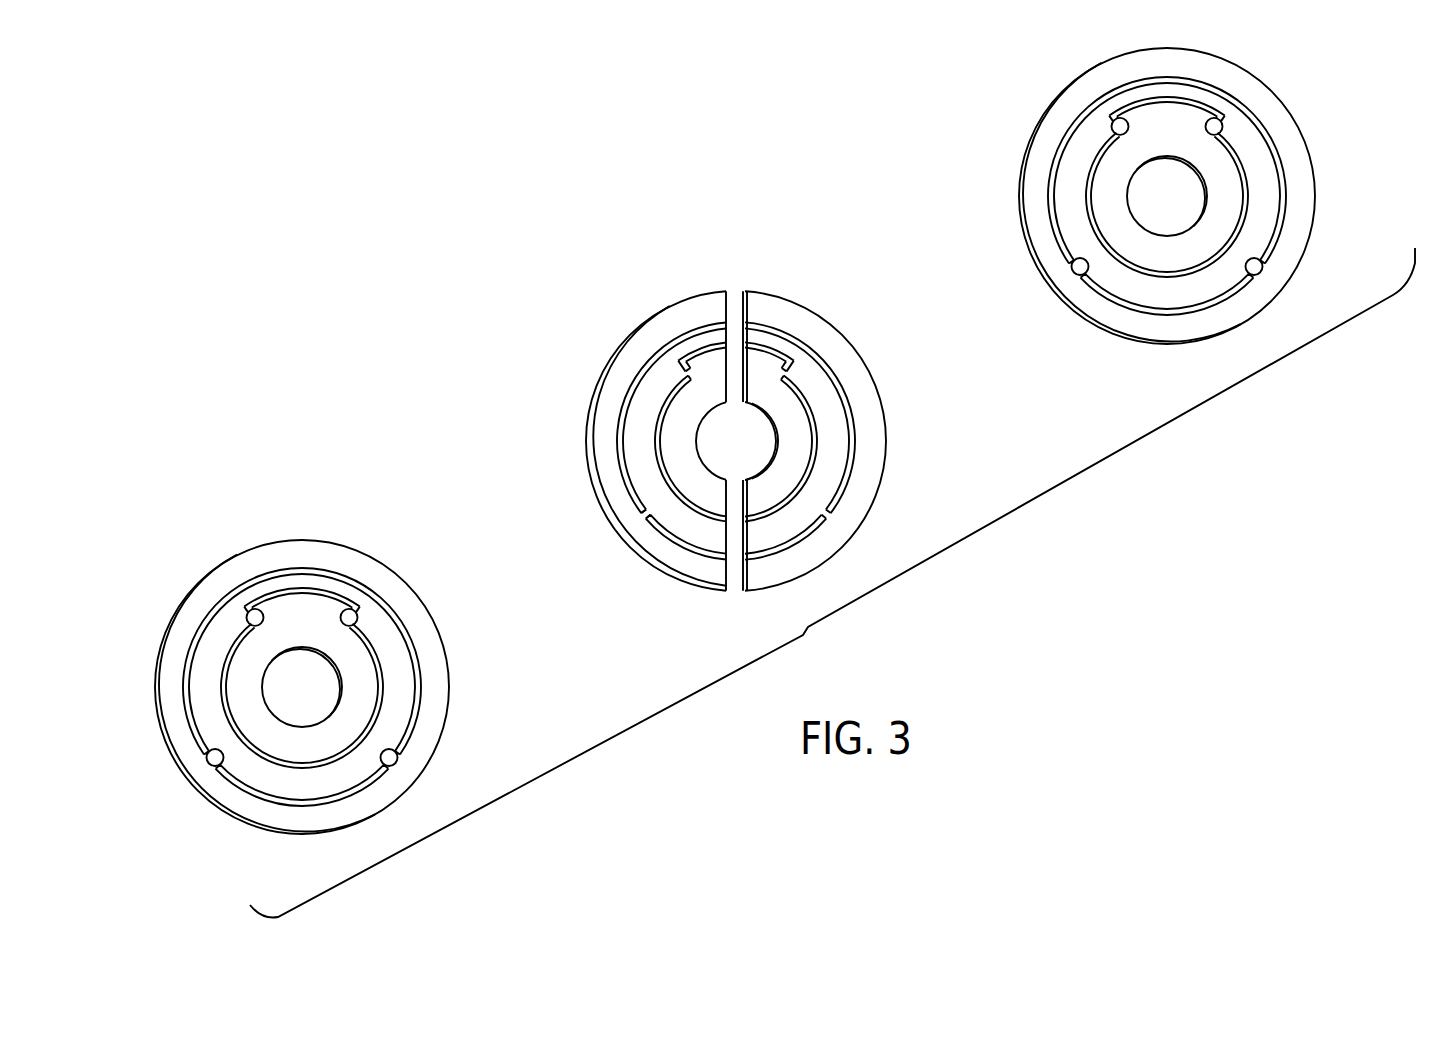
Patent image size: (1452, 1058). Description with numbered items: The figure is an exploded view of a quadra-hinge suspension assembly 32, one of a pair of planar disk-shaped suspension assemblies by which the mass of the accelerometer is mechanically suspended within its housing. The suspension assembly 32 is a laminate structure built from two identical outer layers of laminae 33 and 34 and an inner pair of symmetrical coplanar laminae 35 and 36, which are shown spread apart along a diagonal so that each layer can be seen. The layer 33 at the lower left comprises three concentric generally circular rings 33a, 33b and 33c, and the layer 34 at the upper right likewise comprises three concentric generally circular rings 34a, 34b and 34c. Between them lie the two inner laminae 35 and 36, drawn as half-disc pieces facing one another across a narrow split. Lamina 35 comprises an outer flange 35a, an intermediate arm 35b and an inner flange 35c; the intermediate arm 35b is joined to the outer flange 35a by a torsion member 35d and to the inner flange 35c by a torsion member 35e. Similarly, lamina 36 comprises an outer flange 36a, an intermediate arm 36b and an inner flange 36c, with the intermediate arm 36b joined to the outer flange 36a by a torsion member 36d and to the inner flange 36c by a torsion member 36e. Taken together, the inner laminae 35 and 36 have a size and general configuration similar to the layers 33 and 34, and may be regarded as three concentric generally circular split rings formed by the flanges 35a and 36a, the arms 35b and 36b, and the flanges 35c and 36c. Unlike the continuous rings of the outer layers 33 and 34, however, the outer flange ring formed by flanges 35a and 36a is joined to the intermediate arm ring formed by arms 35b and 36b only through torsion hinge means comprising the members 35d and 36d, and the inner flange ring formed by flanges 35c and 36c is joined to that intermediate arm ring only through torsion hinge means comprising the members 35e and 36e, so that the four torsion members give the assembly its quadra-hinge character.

The suspension assembly 32 is at (224, 537).
The outer layer lamina 33 is at (170, 569).
The outer ring 33a is at (331, 541).
The intermediate ring 33b is at (184, 671).
The inner ring 33c is at (232, 716).
The outer layer lamina 34 is at (1281, 80).
The outer ring 34a is at (1318, 168).
The intermediate ring 34b is at (1287, 197).
The inner ring 34c is at (1243, 222).
The inner lamina 35 is at (708, 275).
The outer flange 35a is at (637, 328).
The intermediate arm 35b is at (635, 386).
The inner flange 35c is at (660, 465).
The torsion member 35d is at (648, 517).
The torsion member 35e is at (687, 370).
The inner lamina 36 is at (769, 283).
The outer flange 36a is at (837, 332).
The intermediate arm 36b is at (827, 366).
The inner flange 36c is at (813, 453).
The torsion member 36d is at (823, 522).
The torsion member 36e is at (785, 362).